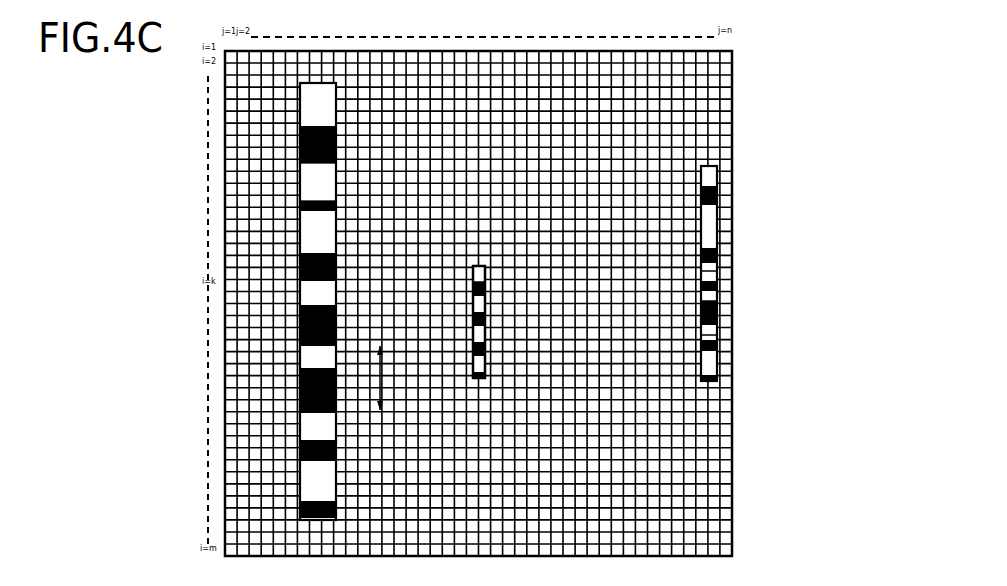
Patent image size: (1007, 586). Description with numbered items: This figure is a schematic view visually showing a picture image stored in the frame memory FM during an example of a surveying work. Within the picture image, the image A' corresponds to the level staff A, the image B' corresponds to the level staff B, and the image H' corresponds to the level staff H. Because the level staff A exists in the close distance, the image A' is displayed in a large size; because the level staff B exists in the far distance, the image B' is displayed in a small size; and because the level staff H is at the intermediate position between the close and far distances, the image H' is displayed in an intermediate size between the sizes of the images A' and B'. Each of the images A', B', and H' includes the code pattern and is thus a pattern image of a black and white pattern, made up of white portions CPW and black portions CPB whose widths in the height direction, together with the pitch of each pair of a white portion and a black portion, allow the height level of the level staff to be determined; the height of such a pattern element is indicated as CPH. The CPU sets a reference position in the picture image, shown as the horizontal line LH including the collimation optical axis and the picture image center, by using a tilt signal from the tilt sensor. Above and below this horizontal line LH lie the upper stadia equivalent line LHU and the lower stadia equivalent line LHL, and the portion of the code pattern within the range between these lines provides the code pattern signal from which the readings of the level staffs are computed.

The frame memory FM is at (725, 63).
The image corresponding to the level staff A A' is at (366, 292).
The image corresponding to the level staff B B' is at (493, 282).
The image corresponding to the level staff H H' is at (692, 229).
The white portion CPW is at (320, 180).
The black portion CPB is at (320, 243).
The check pattern height CPH is at (373, 371).
The upper stadia equivalent line LHU is at (709, 263).
The horizontal line (reference position) LH is at (709, 293).
The lower stadia equivalent line LHL is at (709, 327).